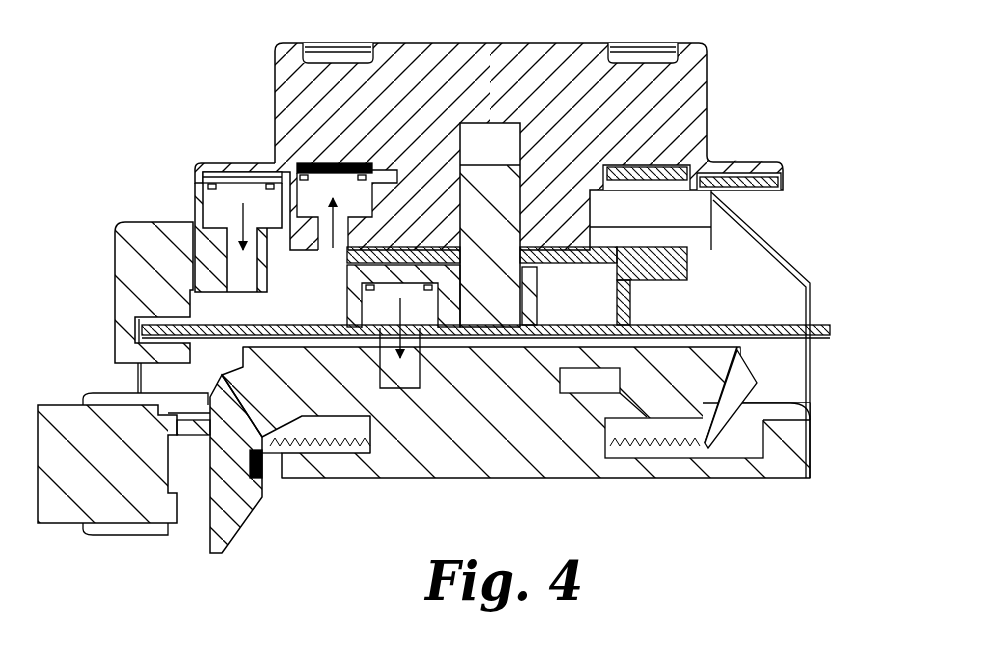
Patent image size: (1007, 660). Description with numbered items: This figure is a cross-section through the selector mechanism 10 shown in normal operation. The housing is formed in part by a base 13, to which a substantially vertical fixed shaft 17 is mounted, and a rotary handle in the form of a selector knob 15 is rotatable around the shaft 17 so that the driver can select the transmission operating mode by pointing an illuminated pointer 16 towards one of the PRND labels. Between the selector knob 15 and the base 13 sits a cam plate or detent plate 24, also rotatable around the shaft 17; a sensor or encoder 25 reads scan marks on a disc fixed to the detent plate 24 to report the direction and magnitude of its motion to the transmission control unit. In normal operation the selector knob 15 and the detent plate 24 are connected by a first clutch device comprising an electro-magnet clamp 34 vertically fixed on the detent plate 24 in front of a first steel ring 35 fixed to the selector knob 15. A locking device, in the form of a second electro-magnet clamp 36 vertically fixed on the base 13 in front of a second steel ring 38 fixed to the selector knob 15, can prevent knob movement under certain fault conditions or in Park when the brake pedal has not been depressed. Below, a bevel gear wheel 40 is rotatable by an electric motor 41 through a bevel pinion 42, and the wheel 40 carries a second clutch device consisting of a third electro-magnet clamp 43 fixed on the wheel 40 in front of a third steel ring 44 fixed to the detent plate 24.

The selector mechanism 10 is at (632, 492).
The base 13 is at (783, 313).
The selector knob 15 is at (708, 92).
The illuminated pointer 16 is at (668, 52).
The fixed shaft 17 is at (488, 178).
The detent plate 24 is at (667, 263).
The sensor 25 is at (120, 254).
The electro-magnet clamp 34 is at (298, 163).
The first steel ring 35 is at (670, 170).
The second electro-magnet clamp 36 is at (222, 210).
The second steel ring 38 is at (783, 162).
The bevel gear wheel 40 is at (713, 377).
The electric motor 41 is at (87, 497).
The bevel pinion 42 is at (230, 507).
The third electro-magnet clamp 43 is at (397, 365).
The third steel ring 44 is at (373, 268).